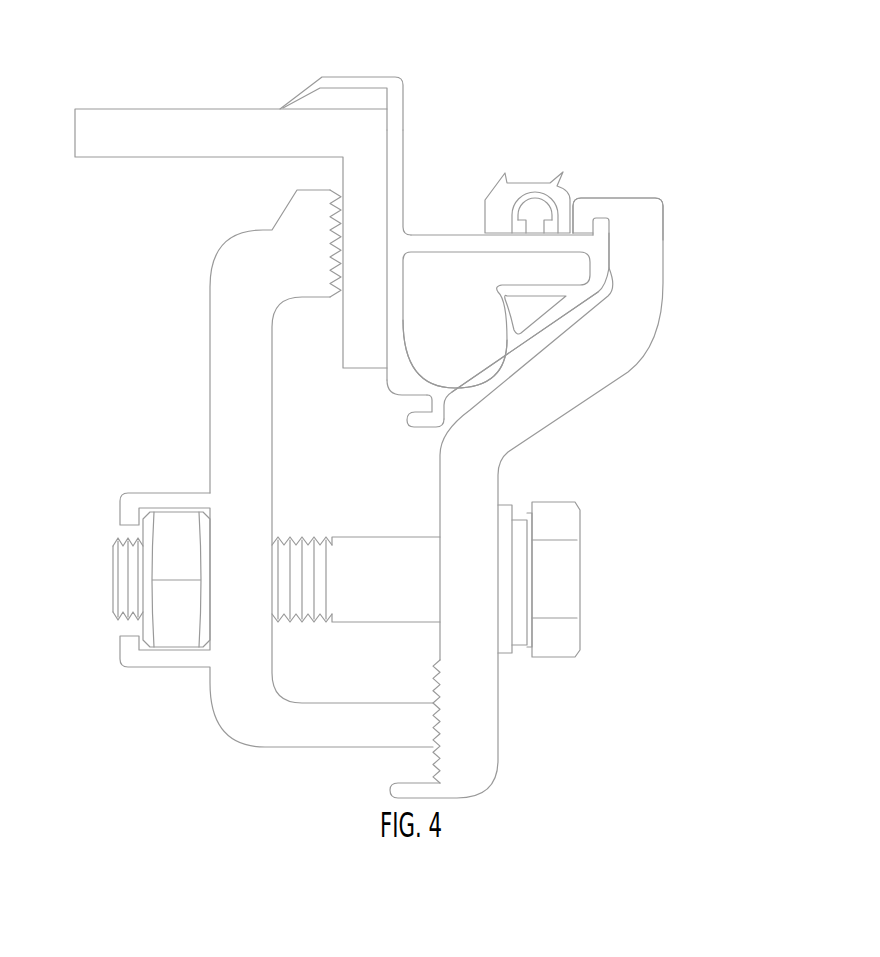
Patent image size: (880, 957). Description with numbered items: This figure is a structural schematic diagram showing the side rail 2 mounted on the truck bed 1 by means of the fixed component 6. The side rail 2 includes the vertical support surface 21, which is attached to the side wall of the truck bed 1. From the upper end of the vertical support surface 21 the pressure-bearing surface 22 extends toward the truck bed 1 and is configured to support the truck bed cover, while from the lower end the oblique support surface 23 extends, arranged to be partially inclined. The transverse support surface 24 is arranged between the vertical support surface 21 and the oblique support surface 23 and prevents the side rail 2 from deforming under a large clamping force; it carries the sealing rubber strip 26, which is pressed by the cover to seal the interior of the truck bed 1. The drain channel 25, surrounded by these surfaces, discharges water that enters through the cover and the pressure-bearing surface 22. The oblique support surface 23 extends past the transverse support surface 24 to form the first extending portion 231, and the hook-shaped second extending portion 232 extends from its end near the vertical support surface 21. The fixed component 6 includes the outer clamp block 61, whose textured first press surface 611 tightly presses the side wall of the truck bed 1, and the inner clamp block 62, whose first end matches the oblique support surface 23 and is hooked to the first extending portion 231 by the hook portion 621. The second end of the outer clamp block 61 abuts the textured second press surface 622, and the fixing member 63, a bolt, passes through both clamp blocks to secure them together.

The truck bed 1 is at (215, 133).
The side rail 2 is at (577, 90).
The vertical support surface 21 is at (404, 150).
The pressure-bearing surface 22 is at (358, 77).
The oblique support surface 23 is at (550, 340).
The first extending portion 231 is at (605, 226).
The transverse support surface 24 is at (437, 245).
The drain channel 25 is at (458, 345).
The sealing rubber strip 26 is at (509, 200).
The second extending portion 232 is at (422, 420).
The fixed component 6 is at (138, 315).
The outer clamp block 61 is at (235, 447).
The first press surface 611 is at (330, 240).
The inner clamp block 62 is at (477, 637).
The hook portion 621 is at (588, 227).
The second press surface 622 is at (433, 728).
The fixing member 63 is at (362, 580).